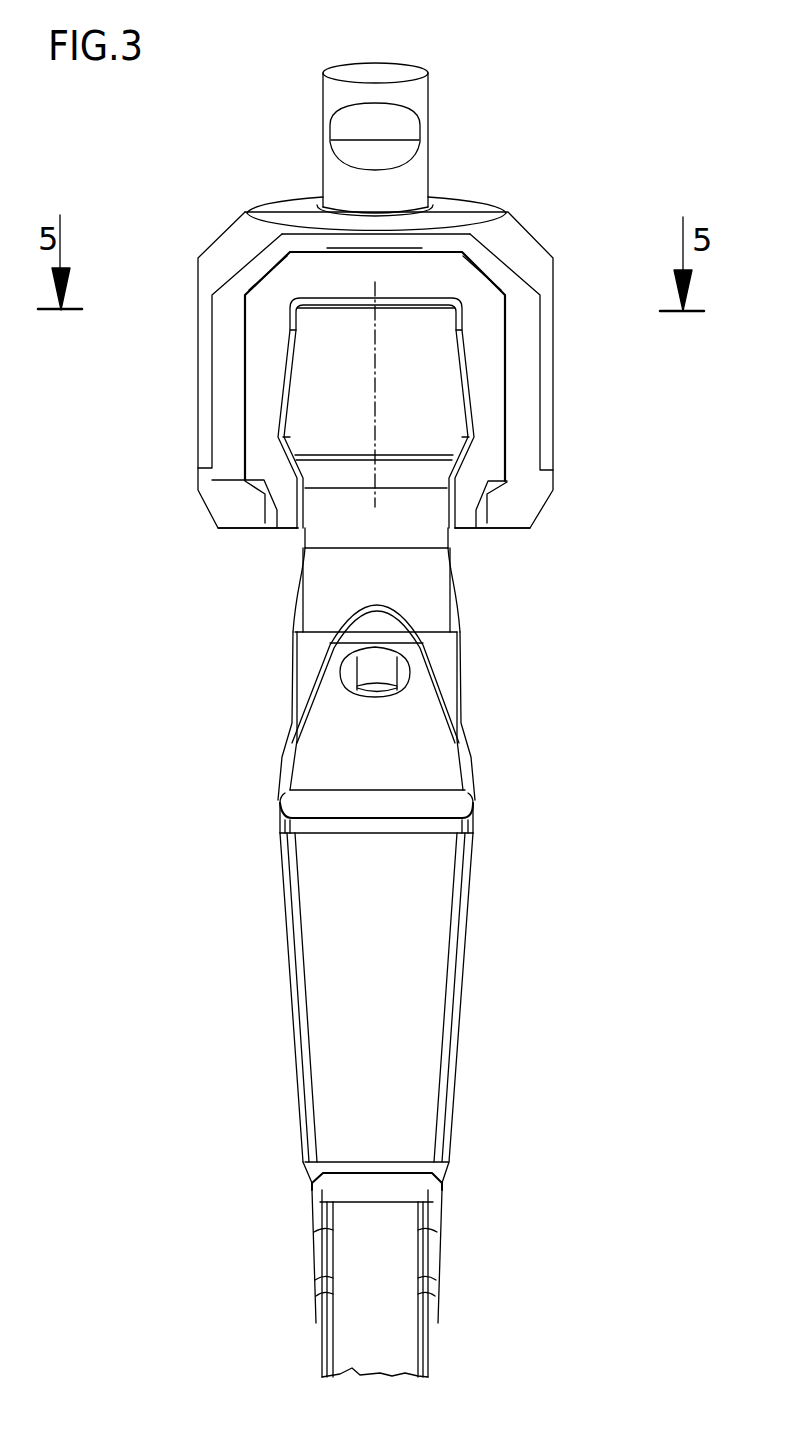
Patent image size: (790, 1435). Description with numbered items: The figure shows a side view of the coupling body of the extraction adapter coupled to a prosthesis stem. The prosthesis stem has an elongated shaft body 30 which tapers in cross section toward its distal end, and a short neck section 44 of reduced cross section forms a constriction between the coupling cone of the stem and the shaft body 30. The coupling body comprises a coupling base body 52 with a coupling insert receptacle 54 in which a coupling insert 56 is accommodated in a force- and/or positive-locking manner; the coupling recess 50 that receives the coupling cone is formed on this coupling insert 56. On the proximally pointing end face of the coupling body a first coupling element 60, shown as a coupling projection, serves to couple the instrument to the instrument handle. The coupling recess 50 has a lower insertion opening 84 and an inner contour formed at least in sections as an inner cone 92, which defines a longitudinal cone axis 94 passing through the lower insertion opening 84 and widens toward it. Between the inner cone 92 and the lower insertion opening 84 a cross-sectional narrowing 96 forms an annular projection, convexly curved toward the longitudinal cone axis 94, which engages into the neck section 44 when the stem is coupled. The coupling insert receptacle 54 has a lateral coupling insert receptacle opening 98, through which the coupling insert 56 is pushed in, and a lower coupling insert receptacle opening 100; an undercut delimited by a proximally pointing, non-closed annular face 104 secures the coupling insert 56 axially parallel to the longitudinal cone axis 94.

The shaft body 30 is at (427, 947).
The neck section 44 is at (447, 483).
The coupling recess 50 is at (284, 370).
The coupling base body 52 is at (227, 295).
The coupling insert receptacle 54 is at (247, 315).
The coupling insert 56 is at (430, 287).
The first coupling element 60 is at (415, 93).
The lower insertion opening 84 is at (447, 529).
The inner cone 92 is at (458, 395).
The longitudinal cone axis 94 is at (377, 338).
The cross-sectional narrowing 96 is at (305, 488).
The lateral coupling insert receptacle opening 98 is at (279, 257).
The lower coupling insert receptacle opening 100 is at (270, 522).
The annular face 104 is at (248, 470).